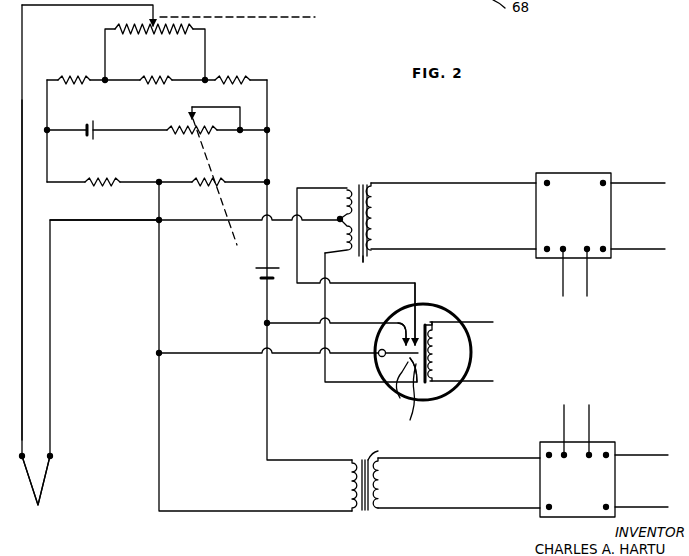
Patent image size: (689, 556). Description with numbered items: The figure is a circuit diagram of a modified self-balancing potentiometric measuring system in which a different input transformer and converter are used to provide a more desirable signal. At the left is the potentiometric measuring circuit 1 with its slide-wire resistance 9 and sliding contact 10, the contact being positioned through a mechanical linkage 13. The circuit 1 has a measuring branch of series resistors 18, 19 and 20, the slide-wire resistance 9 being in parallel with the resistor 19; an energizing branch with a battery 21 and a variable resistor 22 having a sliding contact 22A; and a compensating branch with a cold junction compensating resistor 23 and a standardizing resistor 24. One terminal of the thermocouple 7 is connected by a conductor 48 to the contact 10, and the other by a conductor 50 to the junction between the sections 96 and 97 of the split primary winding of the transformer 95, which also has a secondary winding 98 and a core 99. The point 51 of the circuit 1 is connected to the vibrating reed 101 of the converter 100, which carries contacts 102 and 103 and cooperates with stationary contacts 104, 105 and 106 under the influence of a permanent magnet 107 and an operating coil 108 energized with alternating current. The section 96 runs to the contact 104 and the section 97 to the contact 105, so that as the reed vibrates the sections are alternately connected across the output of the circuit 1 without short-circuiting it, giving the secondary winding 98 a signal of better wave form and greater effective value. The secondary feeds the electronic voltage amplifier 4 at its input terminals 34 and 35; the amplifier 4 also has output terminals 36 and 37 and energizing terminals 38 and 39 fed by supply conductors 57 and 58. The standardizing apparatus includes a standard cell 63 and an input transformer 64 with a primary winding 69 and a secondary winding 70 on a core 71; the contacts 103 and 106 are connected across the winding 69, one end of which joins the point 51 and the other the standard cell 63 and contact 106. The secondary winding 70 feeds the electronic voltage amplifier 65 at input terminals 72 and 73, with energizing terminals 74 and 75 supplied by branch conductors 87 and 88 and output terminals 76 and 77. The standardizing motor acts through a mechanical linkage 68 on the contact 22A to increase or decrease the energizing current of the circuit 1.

The potentiometric measuring circuit 1 is at (297, 100).
The electronic voltage amplifier 4 is at (573, 173).
The thermocouple 7 is at (45, 492).
The slide-wire resistance 9 is at (121, 27).
The sliding contact 10 is at (157, 18).
The mechanical linkage 13 is at (266, 17).
The resistor 18 is at (68, 76).
The resistor 19 is at (155, 77).
The resistor 20 is at (232, 77).
The battery 21 is at (89, 118).
The variable resistor 22 is at (193, 133).
The sliding contact 22A is at (190, 118).
The thermocouple cold junction compensating resistor 23 is at (98, 178).
The standardizing resistor 24 is at (214, 178).
The input terminal 34 is at (546, 184).
The input terminal 35 is at (546, 248).
The output terminal 36 is at (604, 184).
The output terminal 37 is at (604, 248).
The energizing terminal 38 is at (562, 251).
The energizing terminal 39 is at (588, 251).
The conductor 48 is at (24, 215).
The conductor 50 is at (87, 224).
The point 51 is at (157, 178).
The branch supply conductor 57 is at (561, 285).
The branch supply conductor 58 is at (589, 290).
The standard cell 63 is at (254, 277).
The input transformer 64 is at (377, 512).
The electronic voltage amplifier 65 is at (616, 480).
The mechanical linkage 68 is at (233, 239).
The primary winding 69 is at (348, 487).
The secondary winding 70 is at (386, 490).
The core 71 is at (378, 451).
The input terminal 72 is at (548, 454).
The input terminal 73 is at (548, 506).
The energizing terminal 74 is at (565, 457).
The energizing terminal 75 is at (588, 457).
The output terminal 76 is at (607, 454).
The output terminal 77 is at (606, 506).
The branch supply conductor 87 is at (560, 414).
The branch supply conductor 88 is at (590, 418).
The transformer 95 is at (367, 180).
The primary winding section 96 is at (344, 204).
The primary winding section 97 is at (344, 242).
The secondary winding 98 is at (380, 226).
The core 99 is at (364, 263).
The converter 100 is at (518, 344).
The vibrating reed 101 is at (384, 357).
The contact 102 is at (412, 418).
The contact 103 is at (398, 392).
The stationary contact 104 is at (424, 289).
The stationary contact 105 is at (440, 400).
The stationary contact 106 is at (398, 320).
The permanent magnet 107 is at (432, 325).
The operating coil 108 is at (441, 364).